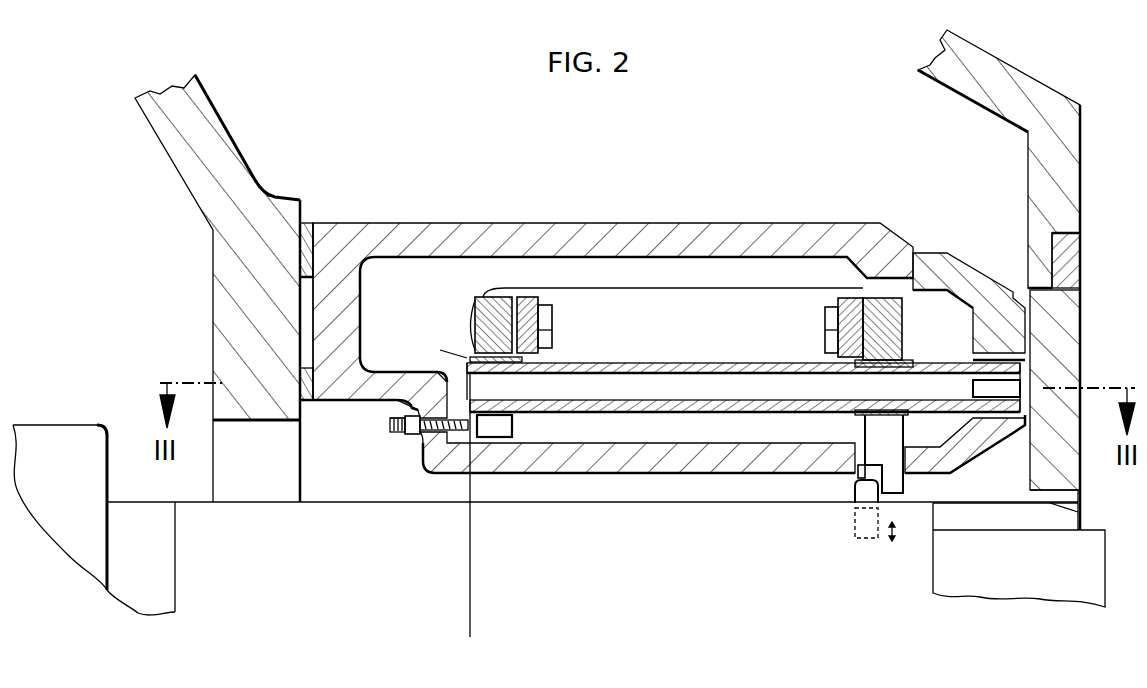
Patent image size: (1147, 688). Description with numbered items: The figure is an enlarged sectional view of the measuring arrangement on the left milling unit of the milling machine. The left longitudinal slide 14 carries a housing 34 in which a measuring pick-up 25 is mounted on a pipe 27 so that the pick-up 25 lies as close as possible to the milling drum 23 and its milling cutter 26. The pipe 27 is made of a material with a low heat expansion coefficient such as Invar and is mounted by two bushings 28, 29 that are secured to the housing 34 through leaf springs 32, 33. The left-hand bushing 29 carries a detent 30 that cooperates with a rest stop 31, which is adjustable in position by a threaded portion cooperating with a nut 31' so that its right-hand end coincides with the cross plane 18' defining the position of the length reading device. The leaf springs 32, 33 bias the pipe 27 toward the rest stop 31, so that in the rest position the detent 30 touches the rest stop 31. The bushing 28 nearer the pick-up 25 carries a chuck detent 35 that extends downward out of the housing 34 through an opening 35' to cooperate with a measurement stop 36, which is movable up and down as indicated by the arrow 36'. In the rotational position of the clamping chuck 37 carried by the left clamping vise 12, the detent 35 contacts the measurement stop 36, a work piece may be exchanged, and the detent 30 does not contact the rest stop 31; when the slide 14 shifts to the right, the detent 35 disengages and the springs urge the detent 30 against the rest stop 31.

The left clamping vise 12 is at (66, 440).
The longitudinal slide 14 is at (218, 148).
The cross plane 18' is at (507, 504).
The milling drum 23 is at (993, 85).
The measuring pick-up 25 is at (1010, 393).
The milling cutter 26 is at (1053, 462).
The pipe 27 is at (687, 366).
The bushing 28 is at (905, 364).
The bushing 29 is at (440, 350).
The detent 30 is at (507, 428).
The rest stop 31 is at (424, 452).
The nut 31' is at (372, 439).
The leaf spring 32 is at (860, 298).
The leaf spring 33 is at (515, 357).
The housing 34 is at (613, 230).
The chuck detent 35 is at (842, 454).
The opening 35' is at (924, 484).
The measurement stop 36 is at (839, 511).
The arrow 36' is at (916, 549).
The clamping chuck 37 is at (1028, 582).